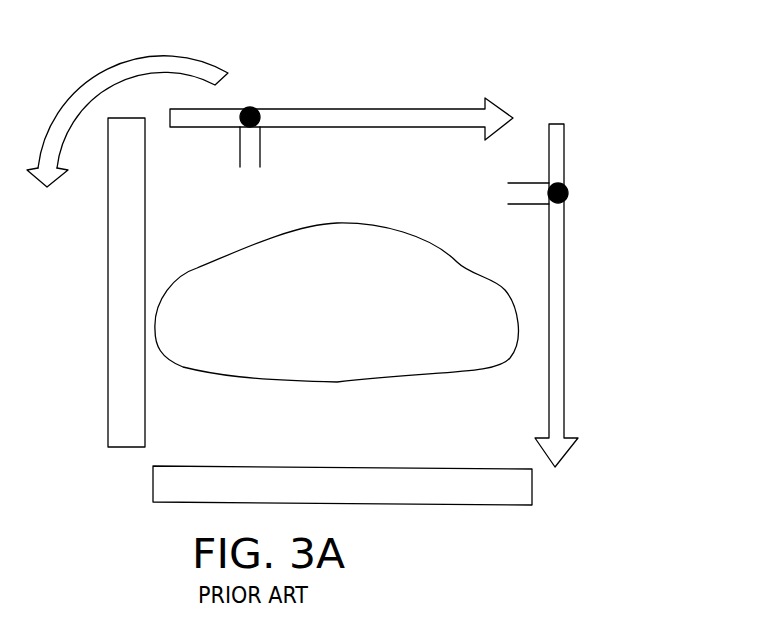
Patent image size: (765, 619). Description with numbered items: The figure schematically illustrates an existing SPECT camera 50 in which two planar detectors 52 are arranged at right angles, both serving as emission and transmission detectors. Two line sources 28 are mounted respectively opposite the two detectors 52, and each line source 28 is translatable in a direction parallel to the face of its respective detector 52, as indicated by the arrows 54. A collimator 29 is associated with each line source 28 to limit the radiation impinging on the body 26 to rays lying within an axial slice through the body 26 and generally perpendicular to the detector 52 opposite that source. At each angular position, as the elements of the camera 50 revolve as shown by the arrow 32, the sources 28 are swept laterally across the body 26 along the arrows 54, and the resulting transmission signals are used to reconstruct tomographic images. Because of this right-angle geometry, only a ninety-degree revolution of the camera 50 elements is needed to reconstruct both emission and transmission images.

The SPECT camera 50 is at (560, 63).
The arrow 32 is at (203, 63).
The arrows 54 is at (358, 118).
The collimator 29 is at (261, 138).
The line source 28 is at (253, 104).
The body 26 is at (218, 272).
The planar detector 52 is at (115, 311).